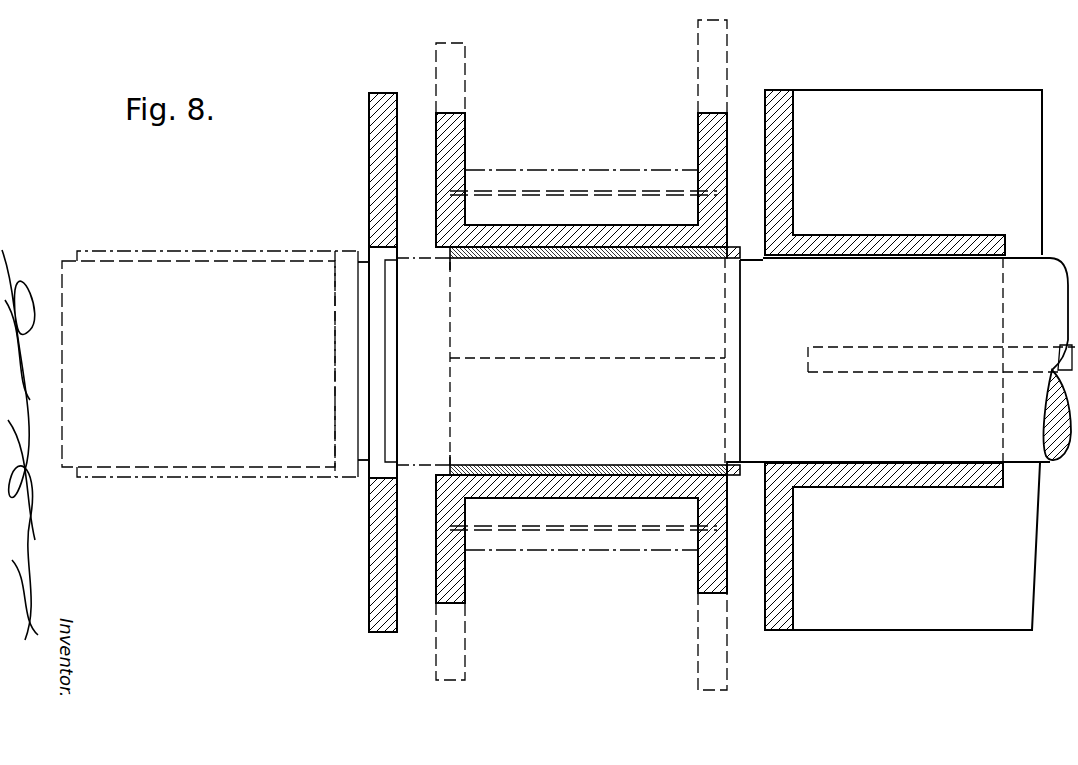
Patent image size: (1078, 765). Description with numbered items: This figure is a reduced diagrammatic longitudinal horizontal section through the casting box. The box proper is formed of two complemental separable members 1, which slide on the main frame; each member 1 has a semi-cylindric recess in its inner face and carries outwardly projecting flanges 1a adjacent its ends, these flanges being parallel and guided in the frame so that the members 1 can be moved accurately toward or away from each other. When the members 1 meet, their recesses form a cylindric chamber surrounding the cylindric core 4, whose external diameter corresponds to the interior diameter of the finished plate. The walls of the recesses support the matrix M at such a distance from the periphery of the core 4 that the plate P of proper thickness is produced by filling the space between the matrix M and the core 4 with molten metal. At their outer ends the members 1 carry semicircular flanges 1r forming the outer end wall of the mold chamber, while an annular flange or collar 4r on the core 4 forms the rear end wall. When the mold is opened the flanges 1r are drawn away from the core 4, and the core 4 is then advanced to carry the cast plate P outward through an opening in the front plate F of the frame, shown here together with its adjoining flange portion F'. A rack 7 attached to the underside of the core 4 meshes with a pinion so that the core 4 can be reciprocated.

The complemental separable member 1 is at (578, 178).
The outwardly projecting flange 1a is at (455, 150).
The semicircular flange 1r is at (440, 258).
The cylindric core 4 is at (180, 455).
The annular flange or collar 4r is at (732, 247).
The rack 7 is at (1062, 353).
The front plate F is at (684, 361).
The flange base F' is at (899, 364).
The matrix M is at (543, 196).
The plate P is at (208, 252).